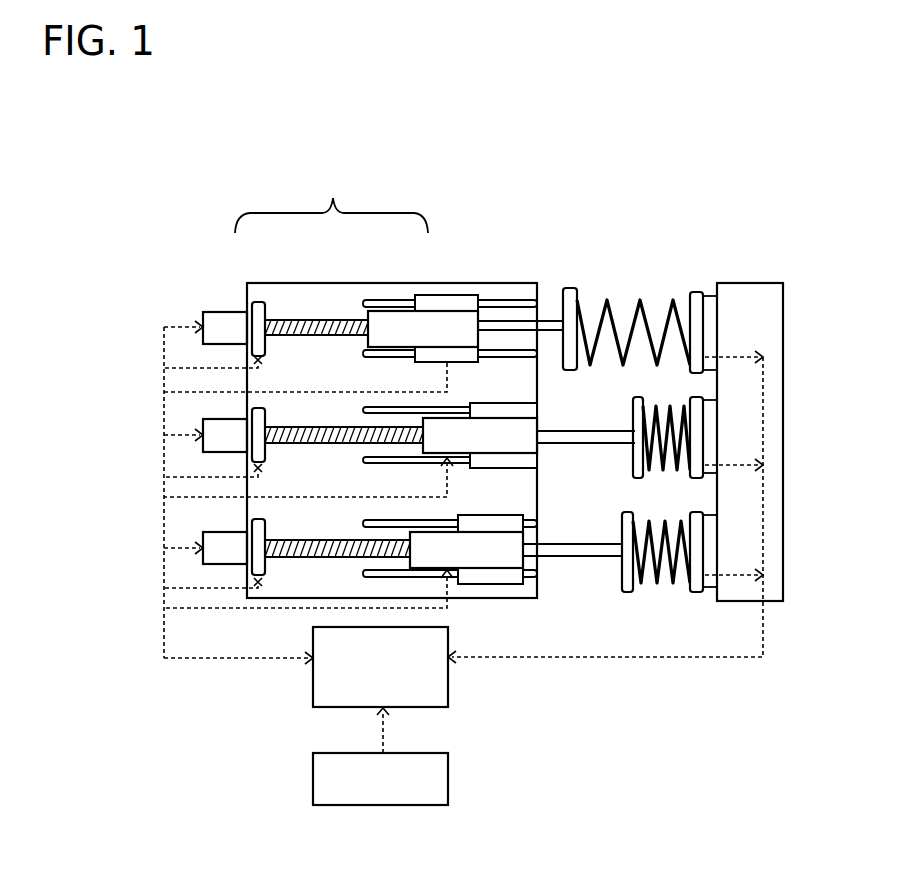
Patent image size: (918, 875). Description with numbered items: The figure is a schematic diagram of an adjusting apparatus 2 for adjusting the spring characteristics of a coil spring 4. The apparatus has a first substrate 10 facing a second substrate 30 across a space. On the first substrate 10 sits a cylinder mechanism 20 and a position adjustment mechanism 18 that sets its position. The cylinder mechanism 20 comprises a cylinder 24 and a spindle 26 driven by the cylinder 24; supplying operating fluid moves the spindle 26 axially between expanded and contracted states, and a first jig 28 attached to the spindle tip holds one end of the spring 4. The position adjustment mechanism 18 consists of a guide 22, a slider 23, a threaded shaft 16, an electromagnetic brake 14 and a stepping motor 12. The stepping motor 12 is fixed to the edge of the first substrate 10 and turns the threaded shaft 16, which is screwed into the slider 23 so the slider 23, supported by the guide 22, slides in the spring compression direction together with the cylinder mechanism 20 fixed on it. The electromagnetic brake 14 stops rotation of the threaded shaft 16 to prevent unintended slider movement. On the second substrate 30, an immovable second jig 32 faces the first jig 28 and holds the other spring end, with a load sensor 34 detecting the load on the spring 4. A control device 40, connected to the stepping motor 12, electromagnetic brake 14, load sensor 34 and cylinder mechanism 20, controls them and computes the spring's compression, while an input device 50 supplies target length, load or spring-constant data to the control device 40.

The adjusting apparatus 2 is at (135, 285).
The spring 4 is at (642, 281).
The first substrate 10 is at (510, 283).
The stepping motor 12 is at (217, 320).
The electromagnetic brake 14 is at (257, 307).
The threaded shaft 16 is at (287, 317).
The position adjustment mechanism 18 is at (331, 194).
The cylinder mechanism 20 is at (467, 292).
The guide 22 is at (380, 304).
The slider 23 is at (443, 306).
The cylinder 24 is at (467, 322).
The spindle 26 is at (542, 327).
The first jig 28 is at (571, 306).
The second substrate 30 is at (762, 283).
The second jig 32 is at (698, 326).
The load sensor 34 is at (712, 300).
The control device 40 is at (448, 695).
The input device 50 is at (448, 765).